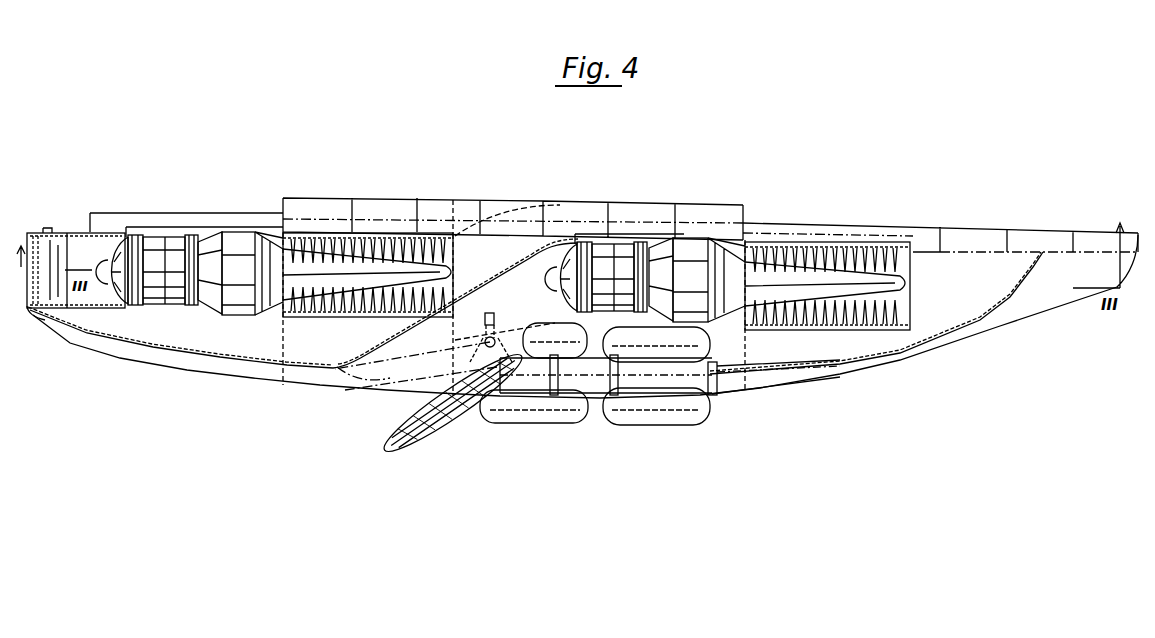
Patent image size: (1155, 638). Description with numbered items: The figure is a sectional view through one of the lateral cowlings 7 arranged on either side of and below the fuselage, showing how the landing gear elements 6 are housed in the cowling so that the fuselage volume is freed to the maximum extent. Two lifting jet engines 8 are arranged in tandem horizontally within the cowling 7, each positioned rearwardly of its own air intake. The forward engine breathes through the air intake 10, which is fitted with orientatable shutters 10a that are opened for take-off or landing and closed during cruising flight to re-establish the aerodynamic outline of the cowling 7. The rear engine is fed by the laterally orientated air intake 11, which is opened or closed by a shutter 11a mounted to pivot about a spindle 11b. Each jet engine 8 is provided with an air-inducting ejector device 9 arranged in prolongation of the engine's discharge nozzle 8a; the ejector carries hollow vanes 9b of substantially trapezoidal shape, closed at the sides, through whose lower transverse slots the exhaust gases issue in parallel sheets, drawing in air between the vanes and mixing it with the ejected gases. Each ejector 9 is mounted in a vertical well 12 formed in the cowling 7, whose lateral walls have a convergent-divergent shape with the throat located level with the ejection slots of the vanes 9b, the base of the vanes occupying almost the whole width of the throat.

The landing gear elements 6 is at (604, 403).
The lateral cowling 7 is at (253, 367).
The lifting jet engine 8 is at (236, 250).
The discharge nozzle 8a is at (268, 245).
The air-inducting ejector device 9 is at (318, 262).
The hollow vanes 9b is at (316, 304).
The air intake 10 is at (90, 297).
The orientatable shutters 10a is at (53, 244).
The air intake 11 is at (476, 300).
The shutter 11a is at (350, 380).
The spindle 11b is at (494, 336).
The vertical well 12 is at (389, 242).